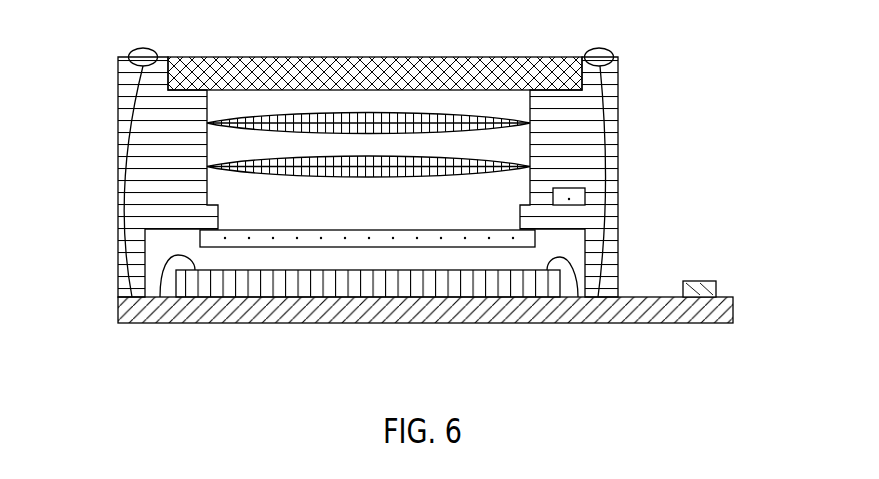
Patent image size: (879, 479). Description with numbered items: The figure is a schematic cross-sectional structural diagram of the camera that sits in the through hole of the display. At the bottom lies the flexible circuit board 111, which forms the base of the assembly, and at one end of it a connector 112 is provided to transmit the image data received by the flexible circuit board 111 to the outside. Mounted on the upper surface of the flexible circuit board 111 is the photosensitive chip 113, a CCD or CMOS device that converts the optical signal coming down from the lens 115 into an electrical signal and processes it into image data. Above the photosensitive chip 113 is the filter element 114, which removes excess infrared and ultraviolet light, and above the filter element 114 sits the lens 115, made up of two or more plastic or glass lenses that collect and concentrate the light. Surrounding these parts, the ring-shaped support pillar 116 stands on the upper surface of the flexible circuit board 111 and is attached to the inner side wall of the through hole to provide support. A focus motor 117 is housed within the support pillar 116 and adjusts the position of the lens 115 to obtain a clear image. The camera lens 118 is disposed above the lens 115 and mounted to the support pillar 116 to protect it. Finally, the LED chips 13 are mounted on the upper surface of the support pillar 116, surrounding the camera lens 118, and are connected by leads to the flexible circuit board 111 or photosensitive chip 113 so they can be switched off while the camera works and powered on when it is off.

The LED chips 13 is at (600, 56).
The flexible circuit board 111 is at (237, 312).
The connector 112 is at (698, 288).
The photosensitive chip 113 is at (287, 285).
The filter element 114 is at (368, 237).
The lens 115 is at (368, 122).
The support pillar 116 is at (153, 192).
The focus motor 117 is at (580, 193).
The camera lens 118 is at (455, 68).